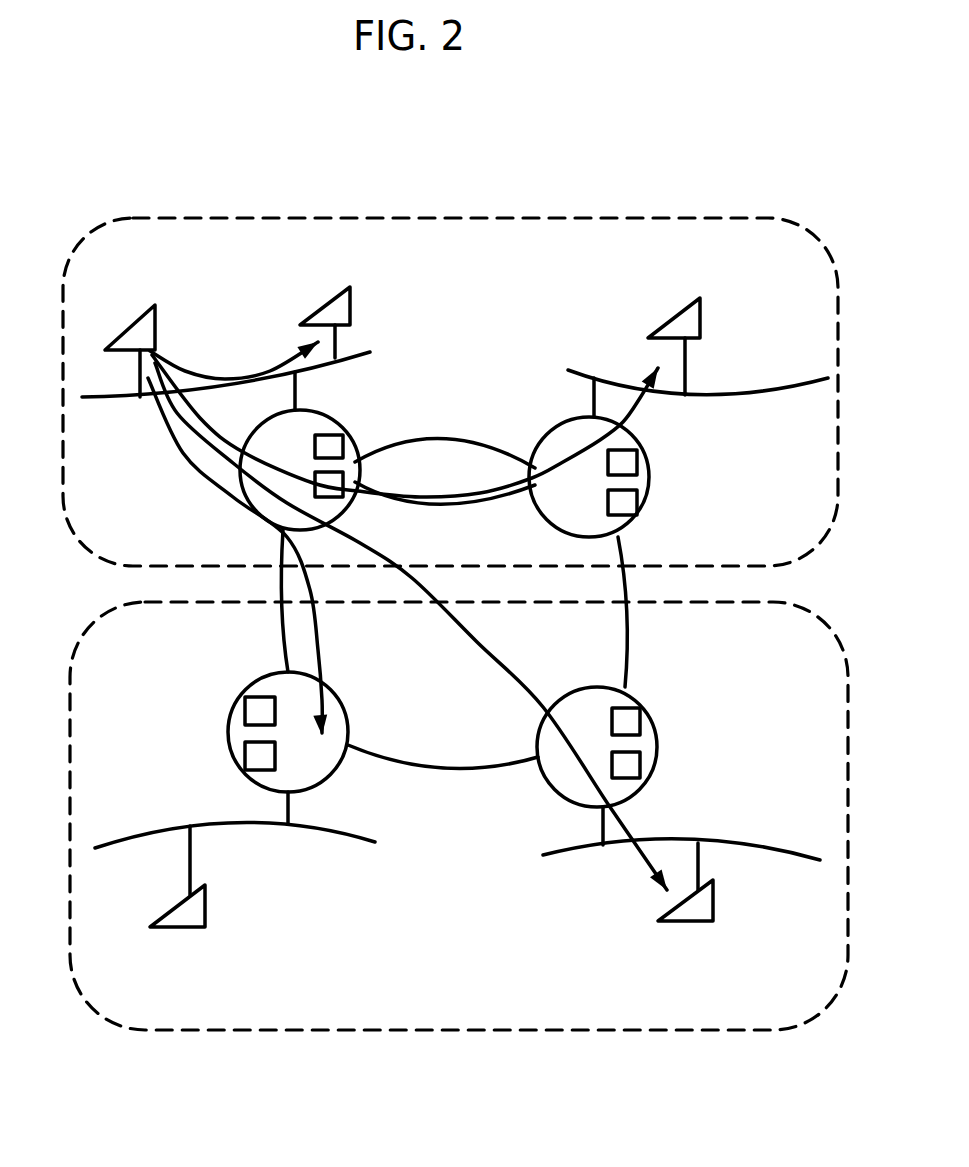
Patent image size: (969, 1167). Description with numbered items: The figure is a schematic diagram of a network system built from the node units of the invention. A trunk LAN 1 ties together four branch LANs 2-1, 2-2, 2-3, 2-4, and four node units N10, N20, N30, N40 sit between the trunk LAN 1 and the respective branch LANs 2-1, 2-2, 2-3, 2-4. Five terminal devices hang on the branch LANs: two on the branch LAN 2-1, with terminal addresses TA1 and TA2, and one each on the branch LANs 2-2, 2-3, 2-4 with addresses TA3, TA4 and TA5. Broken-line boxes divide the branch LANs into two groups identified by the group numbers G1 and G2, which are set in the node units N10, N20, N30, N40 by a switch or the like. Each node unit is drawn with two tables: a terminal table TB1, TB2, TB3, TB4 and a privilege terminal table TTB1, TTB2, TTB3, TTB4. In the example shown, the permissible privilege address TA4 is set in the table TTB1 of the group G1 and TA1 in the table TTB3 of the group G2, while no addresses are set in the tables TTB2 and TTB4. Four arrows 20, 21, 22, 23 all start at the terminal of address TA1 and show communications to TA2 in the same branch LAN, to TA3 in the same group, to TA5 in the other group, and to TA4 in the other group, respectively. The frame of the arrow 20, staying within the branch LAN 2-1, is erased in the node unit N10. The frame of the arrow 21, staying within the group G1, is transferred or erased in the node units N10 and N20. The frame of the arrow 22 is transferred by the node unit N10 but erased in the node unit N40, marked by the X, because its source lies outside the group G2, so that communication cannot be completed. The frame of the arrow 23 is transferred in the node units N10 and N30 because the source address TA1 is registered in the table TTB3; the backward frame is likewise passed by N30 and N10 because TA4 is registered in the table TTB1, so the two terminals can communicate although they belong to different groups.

The trunk LAN 1 is at (404, 455).
The arrow 20 is at (266, 372).
The arrow 21 is at (478, 497).
The arrow 22 is at (325, 625).
The arrow 23 is at (524, 656).
The branch LAN 2-1 is at (100, 396).
The branch LAN 2-2 is at (787, 396).
The branch LAN 2-3 is at (783, 852).
The branch LAN 2-4 is at (105, 848).
The node unit N10 is at (388, 457).
The node unit N20 is at (650, 476).
The node unit N30 is at (660, 765).
The node unit N40 is at (264, 736).
The group number G1 is at (660, 216).
The group number G2 is at (738, 1030).
The terminal table TB1 is at (343, 440).
The privilege terminal table TTB1 is at (343, 478).
The terminal table TB2 is at (637, 465).
The privilege terminal table TTB2 is at (637, 498).
The terminal table TB3 is at (640, 720).
The privilege terminal table TTB3 is at (640, 760).
The terminal table TB4 is at (245, 702).
The privilege terminal table TTB4 is at (245, 758).
The frame discard mark X is at (315, 768).